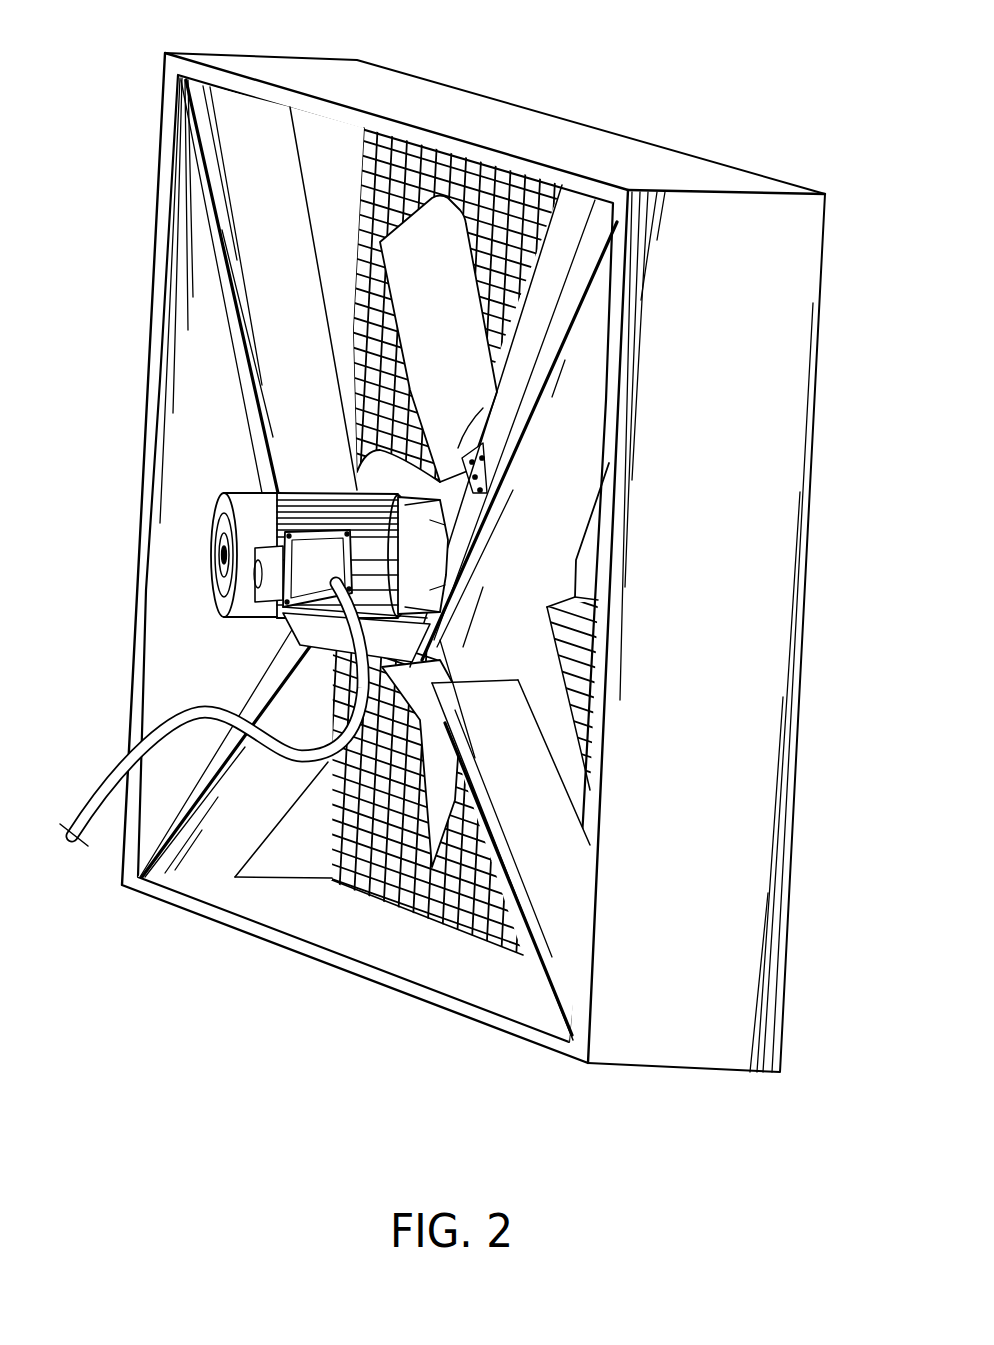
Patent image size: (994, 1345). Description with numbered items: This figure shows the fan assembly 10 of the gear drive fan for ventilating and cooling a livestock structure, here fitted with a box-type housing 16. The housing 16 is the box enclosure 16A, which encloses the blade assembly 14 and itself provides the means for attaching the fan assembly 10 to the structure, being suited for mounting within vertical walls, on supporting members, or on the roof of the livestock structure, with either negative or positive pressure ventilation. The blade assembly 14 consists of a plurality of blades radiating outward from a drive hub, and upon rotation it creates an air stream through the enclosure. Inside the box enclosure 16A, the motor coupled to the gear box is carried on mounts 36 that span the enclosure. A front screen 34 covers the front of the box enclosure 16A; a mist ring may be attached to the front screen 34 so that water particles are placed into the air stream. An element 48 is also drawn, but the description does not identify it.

The fan assembly 10 is at (694, 95).
The blade assembly 14 is at (462, 241).
The housing 16 is at (793, 362).
The box enclosure 16A is at (738, 516).
The front screen 34 is at (402, 162).
The mounts 36 is at (303, 311).
The power cord 48 is at (100, 792).